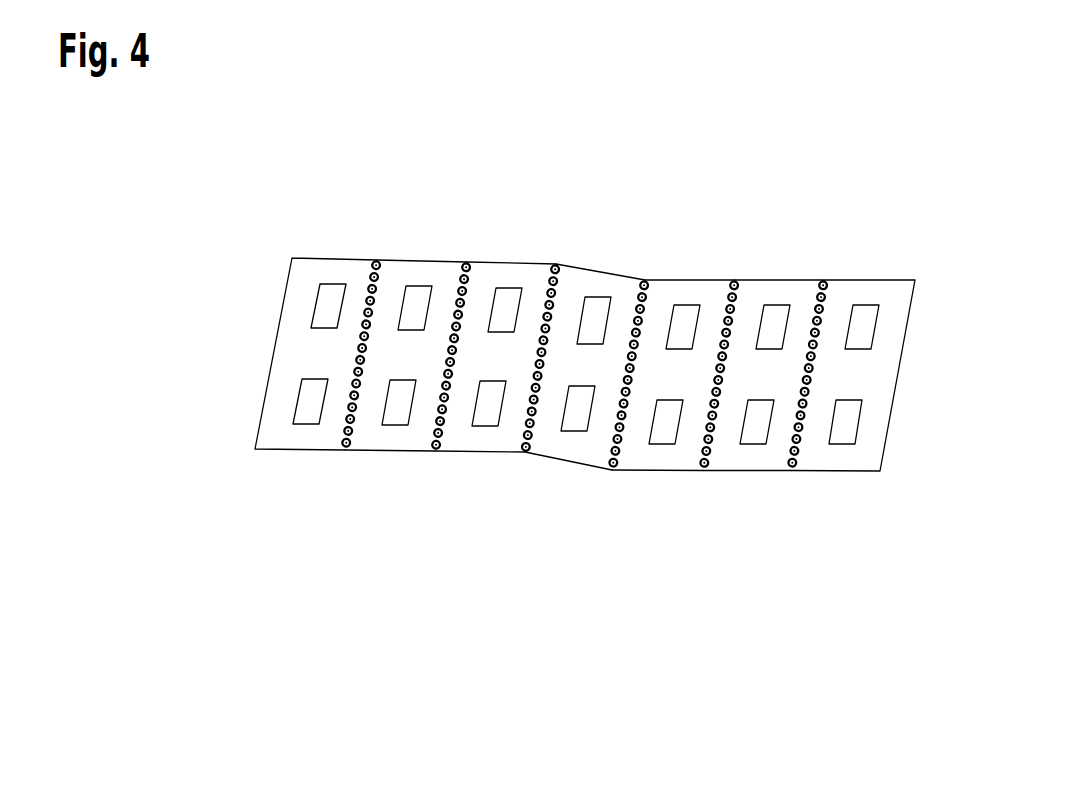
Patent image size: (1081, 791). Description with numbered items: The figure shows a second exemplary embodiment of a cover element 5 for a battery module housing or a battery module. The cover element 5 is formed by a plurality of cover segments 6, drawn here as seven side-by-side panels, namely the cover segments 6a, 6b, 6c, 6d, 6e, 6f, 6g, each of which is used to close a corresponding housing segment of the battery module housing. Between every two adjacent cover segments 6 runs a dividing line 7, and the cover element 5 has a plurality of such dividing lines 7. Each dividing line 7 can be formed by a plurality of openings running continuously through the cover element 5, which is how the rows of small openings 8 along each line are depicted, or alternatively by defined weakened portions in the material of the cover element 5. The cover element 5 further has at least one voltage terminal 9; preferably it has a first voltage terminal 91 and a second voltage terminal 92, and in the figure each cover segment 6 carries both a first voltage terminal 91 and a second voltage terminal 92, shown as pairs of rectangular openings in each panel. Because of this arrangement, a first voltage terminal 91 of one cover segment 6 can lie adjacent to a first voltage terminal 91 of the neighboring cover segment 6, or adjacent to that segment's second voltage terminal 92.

The cover element 5 is at (296, 666).
The cover segment 6 is at (585, 423).
The cover segment 6a is at (282, 430).
The cover segment 6b is at (372, 432).
The cover segment 6c is at (461, 434).
The cover segment 6d is at (550, 437).
The cover segment 6e is at (638, 452).
The cover segment 6f is at (728, 452).
The cover segment 6g is at (867, 453).
The dividing line 7 is at (584, 327).
The perforation hole 8 is at (382, 274).
The voltage terminal 9 is at (671, 366).
The first voltage terminal 91 is at (777, 318).
The second voltage terminal 92 is at (853, 427).